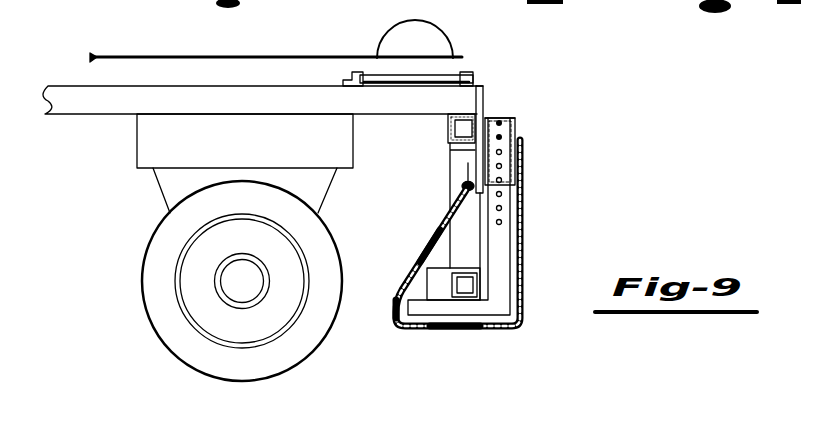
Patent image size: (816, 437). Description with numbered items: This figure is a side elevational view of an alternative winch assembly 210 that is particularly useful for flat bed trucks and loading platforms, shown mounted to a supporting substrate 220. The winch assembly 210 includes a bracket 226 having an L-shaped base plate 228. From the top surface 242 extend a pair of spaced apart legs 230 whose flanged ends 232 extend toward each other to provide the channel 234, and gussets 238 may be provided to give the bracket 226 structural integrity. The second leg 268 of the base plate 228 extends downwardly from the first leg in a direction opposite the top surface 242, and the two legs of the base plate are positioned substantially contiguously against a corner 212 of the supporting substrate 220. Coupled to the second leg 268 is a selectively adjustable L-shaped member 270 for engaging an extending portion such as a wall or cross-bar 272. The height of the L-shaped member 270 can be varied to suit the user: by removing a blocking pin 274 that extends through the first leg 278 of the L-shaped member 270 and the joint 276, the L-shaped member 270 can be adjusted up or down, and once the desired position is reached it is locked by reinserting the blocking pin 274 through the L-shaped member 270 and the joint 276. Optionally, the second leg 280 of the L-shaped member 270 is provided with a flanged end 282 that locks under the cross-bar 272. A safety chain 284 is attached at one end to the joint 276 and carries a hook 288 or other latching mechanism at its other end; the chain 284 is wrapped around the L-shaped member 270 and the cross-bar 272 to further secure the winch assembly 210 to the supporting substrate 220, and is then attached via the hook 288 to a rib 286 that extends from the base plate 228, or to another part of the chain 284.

The winch assembly 210 is at (553, 159).
The corner 212 is at (487, 92).
The supporting substrate 220 is at (136, 118).
The bracket 226 is at (342, 94).
The L-shaped base plate 228 is at (437, 116).
The legs 230 is at (466, 72).
The flanged ends 232 is at (362, 72).
The channel 234 is at (372, 87).
The gussets 238 is at (345, 57).
The top surface 242 is at (484, 87).
The second leg 268 is at (447, 150).
The L-shaped member 270 is at (500, 255).
The cross-bar 272 is at (478, 290).
The blocking pin 274 is at (516, 138).
The joint 276 is at (515, 118).
The first leg 278 is at (526, 210).
The second leg 280 is at (476, 326).
The flanged end 282 is at (395, 300).
The chain 284 is at (420, 243).
The rib 286 is at (450, 178).
The hook 288 is at (453, 189).